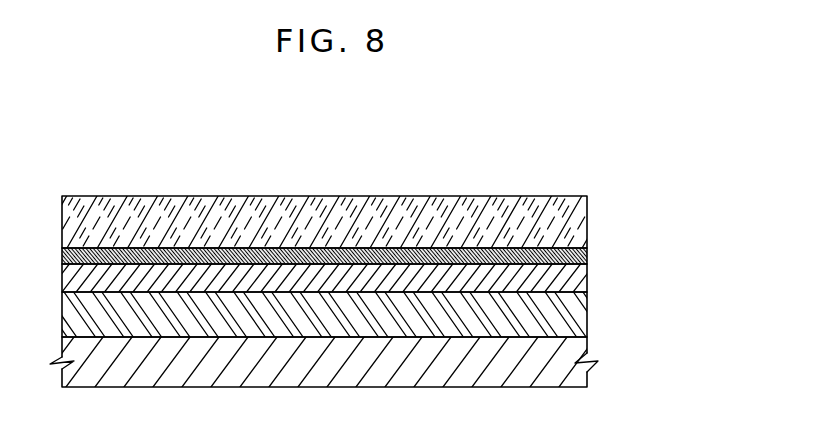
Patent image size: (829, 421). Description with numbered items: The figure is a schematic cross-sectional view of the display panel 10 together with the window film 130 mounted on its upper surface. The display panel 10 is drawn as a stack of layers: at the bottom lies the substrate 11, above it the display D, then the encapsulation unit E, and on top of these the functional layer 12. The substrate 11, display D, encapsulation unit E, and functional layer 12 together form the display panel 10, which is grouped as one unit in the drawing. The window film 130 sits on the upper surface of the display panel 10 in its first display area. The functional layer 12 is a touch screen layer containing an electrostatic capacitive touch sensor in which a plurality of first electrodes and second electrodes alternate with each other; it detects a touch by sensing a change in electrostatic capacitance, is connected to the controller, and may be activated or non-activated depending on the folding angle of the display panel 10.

The window film 130 is at (583, 222).
The display panel 10 is at (362, 315).
The functional layer 12 is at (583, 258).
The encapsulation unit E is at (583, 282).
The display D is at (583, 318).
The substrate 11 is at (339, 362).